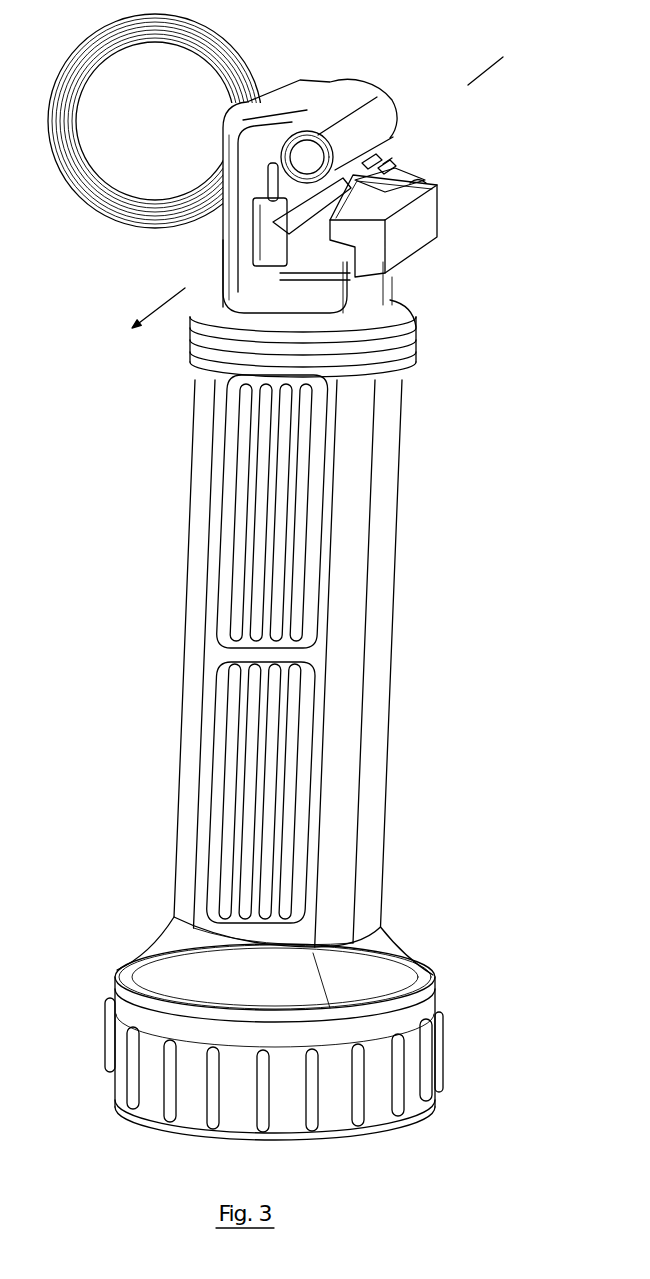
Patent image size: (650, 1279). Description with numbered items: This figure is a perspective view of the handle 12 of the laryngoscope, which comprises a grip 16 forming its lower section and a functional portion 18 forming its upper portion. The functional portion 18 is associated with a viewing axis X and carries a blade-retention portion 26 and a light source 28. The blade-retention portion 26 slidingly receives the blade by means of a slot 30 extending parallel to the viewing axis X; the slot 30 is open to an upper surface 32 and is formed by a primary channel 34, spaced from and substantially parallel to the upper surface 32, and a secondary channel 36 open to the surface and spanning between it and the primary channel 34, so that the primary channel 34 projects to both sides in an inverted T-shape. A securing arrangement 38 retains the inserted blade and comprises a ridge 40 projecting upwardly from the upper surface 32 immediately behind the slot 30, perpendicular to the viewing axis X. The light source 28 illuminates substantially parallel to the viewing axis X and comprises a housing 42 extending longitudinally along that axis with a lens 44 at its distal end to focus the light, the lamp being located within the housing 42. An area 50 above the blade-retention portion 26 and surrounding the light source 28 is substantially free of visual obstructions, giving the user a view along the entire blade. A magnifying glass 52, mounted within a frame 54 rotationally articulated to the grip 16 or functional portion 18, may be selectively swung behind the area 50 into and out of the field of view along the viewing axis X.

The handle 12 is at (319, 728).
The grip 16 is at (372, 829).
The functional portion 18 is at (419, 270).
The blade-retention portion 26 is at (418, 232).
The light source 28 is at (372, 150).
The slot 30 is at (343, 243).
The upper surface 32 is at (417, 182).
The primary channel 34 is at (352, 250).
The secondary channel 36 is at (372, 152).
The securing arrangement 38 is at (388, 155).
The ridge 40 is at (362, 179).
The housing 42 is at (347, 117).
The lens 44 is at (268, 137).
The area 50 is at (385, 162).
The magnifying glass 52 is at (147, 170).
The frame 54 is at (58, 153).
The viewing axis X is at (493, 70).